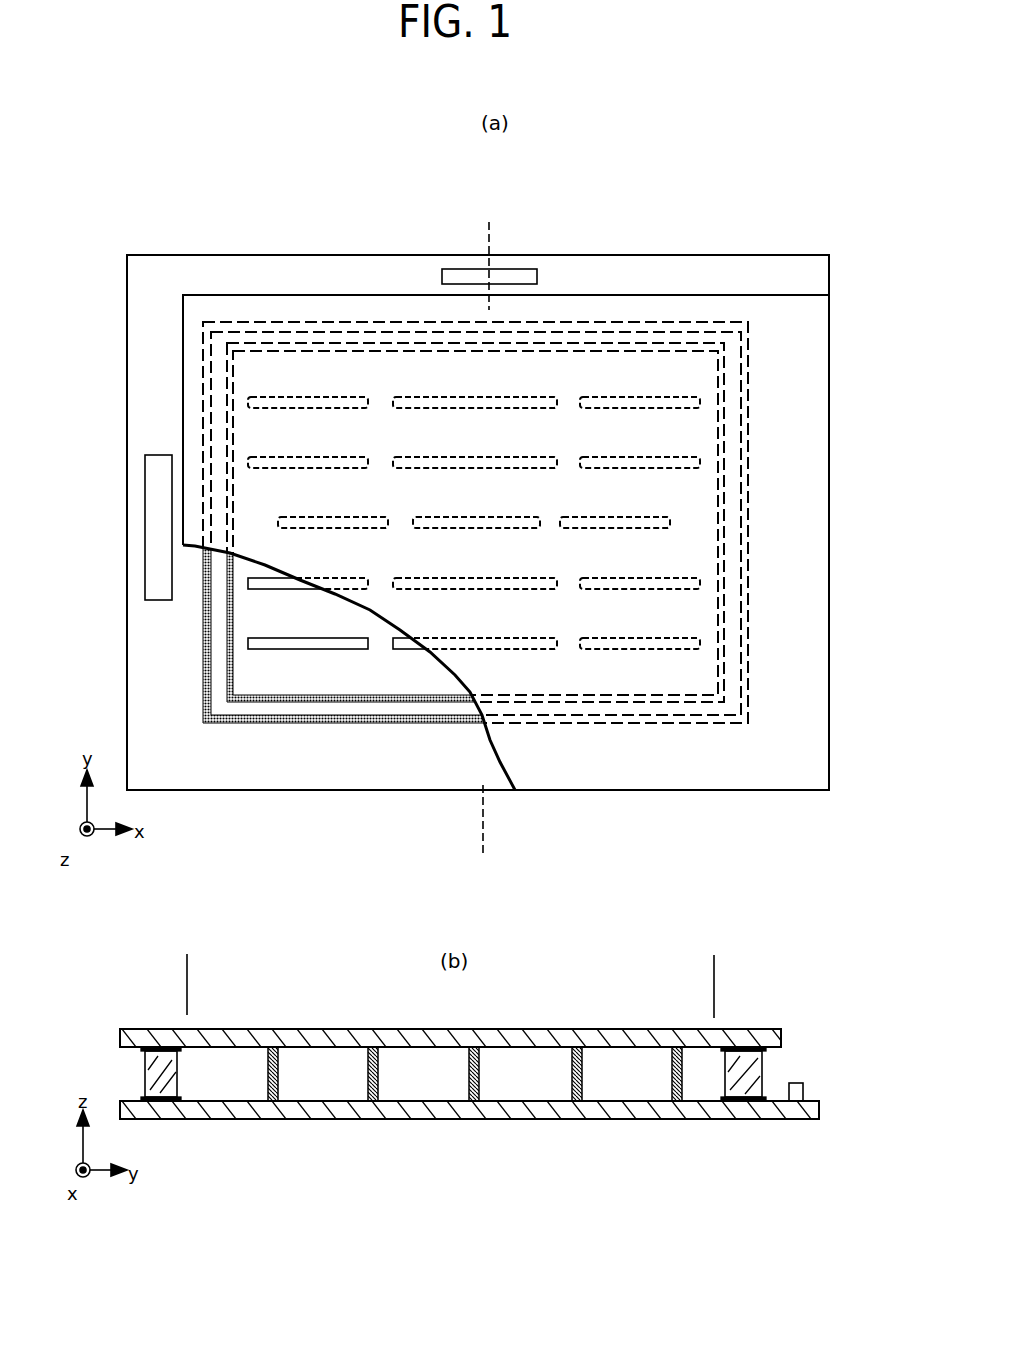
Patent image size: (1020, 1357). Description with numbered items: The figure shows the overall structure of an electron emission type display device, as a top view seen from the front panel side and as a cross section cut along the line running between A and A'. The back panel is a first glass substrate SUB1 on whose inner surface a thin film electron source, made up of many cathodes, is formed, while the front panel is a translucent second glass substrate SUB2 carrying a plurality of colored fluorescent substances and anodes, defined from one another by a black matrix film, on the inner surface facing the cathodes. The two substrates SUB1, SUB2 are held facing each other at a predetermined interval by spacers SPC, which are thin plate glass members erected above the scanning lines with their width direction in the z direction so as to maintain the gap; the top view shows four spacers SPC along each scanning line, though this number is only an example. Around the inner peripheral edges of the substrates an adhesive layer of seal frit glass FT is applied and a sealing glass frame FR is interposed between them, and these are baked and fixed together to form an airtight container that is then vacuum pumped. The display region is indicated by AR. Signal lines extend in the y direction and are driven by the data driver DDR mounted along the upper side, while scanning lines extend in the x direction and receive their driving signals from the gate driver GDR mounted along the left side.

The first glass substrate SUB1 is at (240, 262).
The second glass substrate SUB2 is at (641, 312).
The signal line driving circuit (data driver) DDR is at (525, 275).
The scanning line driving circuit (gate driver) GDR is at (145, 545).
The spacer SPC is at (683, 395).
The sealing frame FR is at (247, 712).
The adhesive layer (seal frit glass) FT is at (360, 703).
The display region AR is at (187, 968).
The section line A is at (308, 610).
The section line A' is at (641, 911).